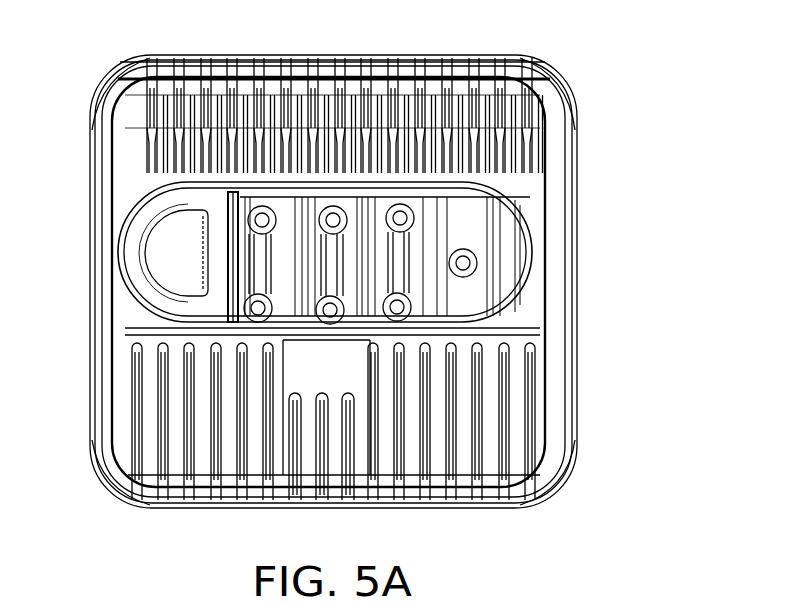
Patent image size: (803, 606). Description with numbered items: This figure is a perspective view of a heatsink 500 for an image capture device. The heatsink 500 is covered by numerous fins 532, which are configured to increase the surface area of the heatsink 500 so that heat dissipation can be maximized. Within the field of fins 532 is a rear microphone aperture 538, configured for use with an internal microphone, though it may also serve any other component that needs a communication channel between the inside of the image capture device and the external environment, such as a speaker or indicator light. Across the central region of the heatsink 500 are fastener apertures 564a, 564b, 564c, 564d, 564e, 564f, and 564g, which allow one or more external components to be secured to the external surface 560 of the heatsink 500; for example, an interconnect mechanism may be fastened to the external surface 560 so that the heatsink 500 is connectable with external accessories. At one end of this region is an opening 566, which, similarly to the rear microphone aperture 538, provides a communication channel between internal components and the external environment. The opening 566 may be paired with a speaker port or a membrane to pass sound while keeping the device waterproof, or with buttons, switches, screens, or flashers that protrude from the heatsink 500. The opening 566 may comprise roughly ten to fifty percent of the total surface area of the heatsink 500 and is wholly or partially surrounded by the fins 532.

The heatsink 500 is at (393, 280).
The fins 532 is at (543, 340).
The rear microphone aperture 538 is at (226, 190).
The external surface 560 is at (316, 373).
The fastener aperture 564a is at (250, 221).
The fastener aperture 564b is at (246, 303).
The fastener aperture 564c is at (414, 221).
The fastener aperture 564d is at (411, 304).
The fastener aperture 564e is at (478, 262).
The fastener aperture 564f is at (341, 297).
The mounting hole 564g is at (324, 208).
The opening 566 is at (148, 266).